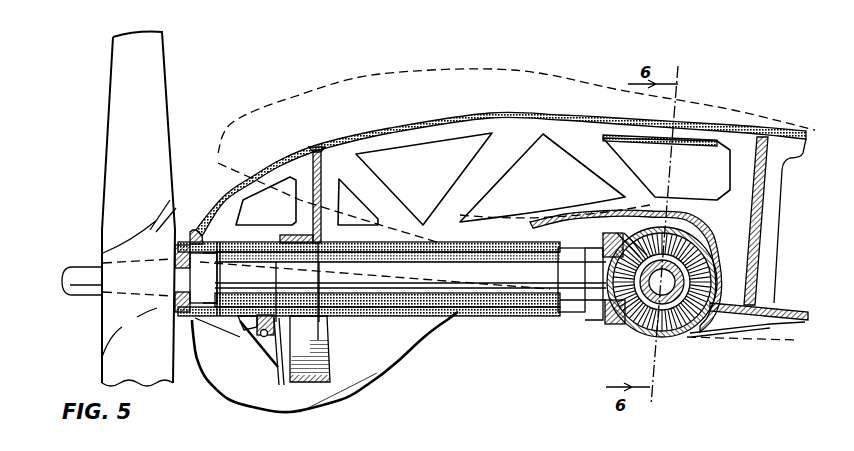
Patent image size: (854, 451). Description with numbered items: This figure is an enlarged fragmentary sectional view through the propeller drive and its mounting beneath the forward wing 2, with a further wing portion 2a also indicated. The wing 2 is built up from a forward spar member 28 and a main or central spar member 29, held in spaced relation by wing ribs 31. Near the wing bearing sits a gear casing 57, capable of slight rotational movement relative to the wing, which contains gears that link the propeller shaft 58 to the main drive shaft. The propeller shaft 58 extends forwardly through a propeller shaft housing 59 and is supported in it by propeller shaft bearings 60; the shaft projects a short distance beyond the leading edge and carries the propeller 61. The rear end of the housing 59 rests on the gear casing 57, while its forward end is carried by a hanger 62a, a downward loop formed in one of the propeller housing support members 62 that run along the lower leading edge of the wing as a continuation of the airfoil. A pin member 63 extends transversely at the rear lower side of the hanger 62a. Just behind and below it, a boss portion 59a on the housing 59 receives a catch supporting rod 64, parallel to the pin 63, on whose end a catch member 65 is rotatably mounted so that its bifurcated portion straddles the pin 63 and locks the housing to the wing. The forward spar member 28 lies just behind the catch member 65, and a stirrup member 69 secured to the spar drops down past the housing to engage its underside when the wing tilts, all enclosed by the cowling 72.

The forward wing 2 is at (437, 103).
The frame arch member 2a is at (567, 230).
The forward spar member 28 is at (333, 148).
The main or central spar member 29 is at (776, 130).
The wing ribs 31 is at (420, 431).
The gear casing 57 is at (681, 338).
The propeller shaft 58 is at (380, 273).
The propeller shaft housing 59 is at (458, 314).
The boss portion 59a is at (231, 322).
The propeller shaft bearings 60 is at (195, 320).
The propeller 61 is at (165, 120).
The propeller housing support members 62 is at (192, 238).
The hanger 62a is at (213, 318).
The pin member 63 is at (247, 328).
The catch supporting rod 64 is at (245, 337).
The catch member 65 is at (278, 365).
The stirrup member 69 is at (335, 335).
The cowling 72 is at (405, 363).